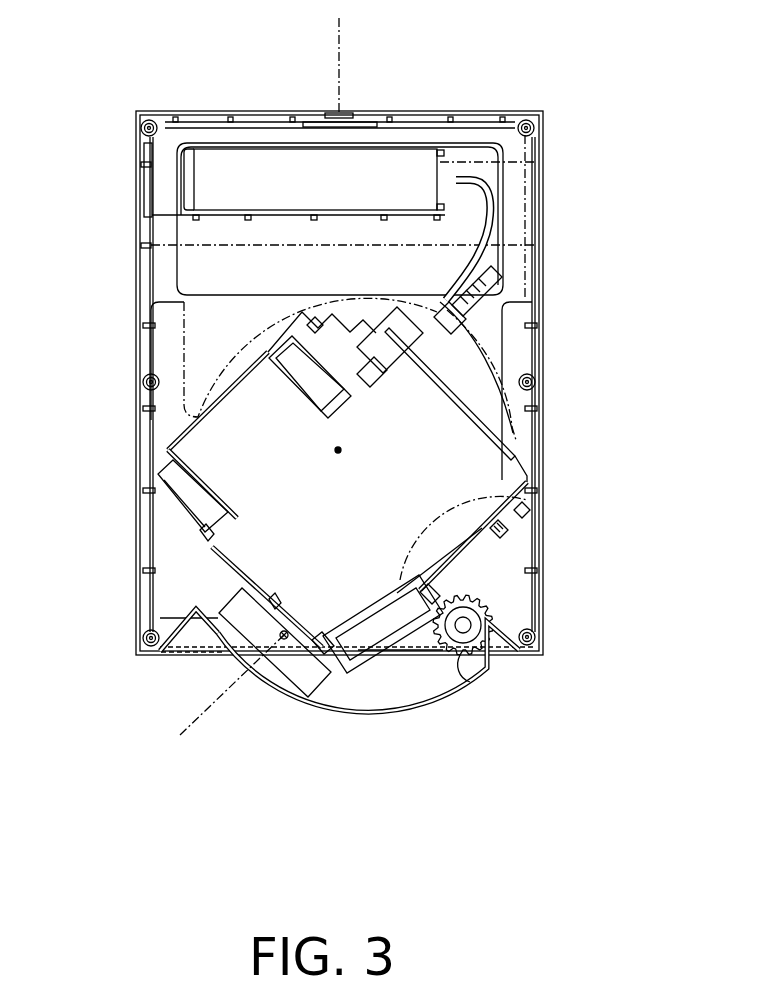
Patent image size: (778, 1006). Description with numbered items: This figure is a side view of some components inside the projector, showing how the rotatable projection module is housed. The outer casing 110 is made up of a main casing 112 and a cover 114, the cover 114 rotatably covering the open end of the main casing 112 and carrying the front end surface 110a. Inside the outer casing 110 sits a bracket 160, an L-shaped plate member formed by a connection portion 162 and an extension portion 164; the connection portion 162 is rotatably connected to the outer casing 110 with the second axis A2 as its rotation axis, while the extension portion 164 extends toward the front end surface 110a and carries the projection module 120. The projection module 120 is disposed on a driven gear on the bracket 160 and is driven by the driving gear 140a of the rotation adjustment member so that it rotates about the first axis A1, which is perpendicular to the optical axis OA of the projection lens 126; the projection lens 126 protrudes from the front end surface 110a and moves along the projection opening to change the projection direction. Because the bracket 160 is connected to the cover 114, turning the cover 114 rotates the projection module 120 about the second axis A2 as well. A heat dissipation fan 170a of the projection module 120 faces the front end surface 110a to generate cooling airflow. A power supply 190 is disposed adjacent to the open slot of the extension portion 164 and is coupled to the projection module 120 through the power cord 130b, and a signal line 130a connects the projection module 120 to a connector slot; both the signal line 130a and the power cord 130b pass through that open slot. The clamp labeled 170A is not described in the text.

The outer casing 110 is at (348, 403).
The front end surface 110a is at (188, 658).
The main casing 112 is at (542, 600).
The cover 114 is at (543, 627).
The projection module 120 is at (518, 443).
The projection lens 126 is at (240, 607).
The signal line 130a is at (490, 272).
The power cord 130b is at (478, 228).
The driving gear 140a is at (487, 680).
The bracket 160 is at (394, 303).
The connection portion 162 is at (512, 136).
The extension portion 164 is at (513, 182).
The first clamp 170A is at (190, 500).
The heat dissipation fan 170a is at (485, 555).
The power supply 190 is at (217, 162).
The first axis A1 is at (339, 455).
The second axis A2 is at (340, 38).
The optical axis OA is at (200, 730).